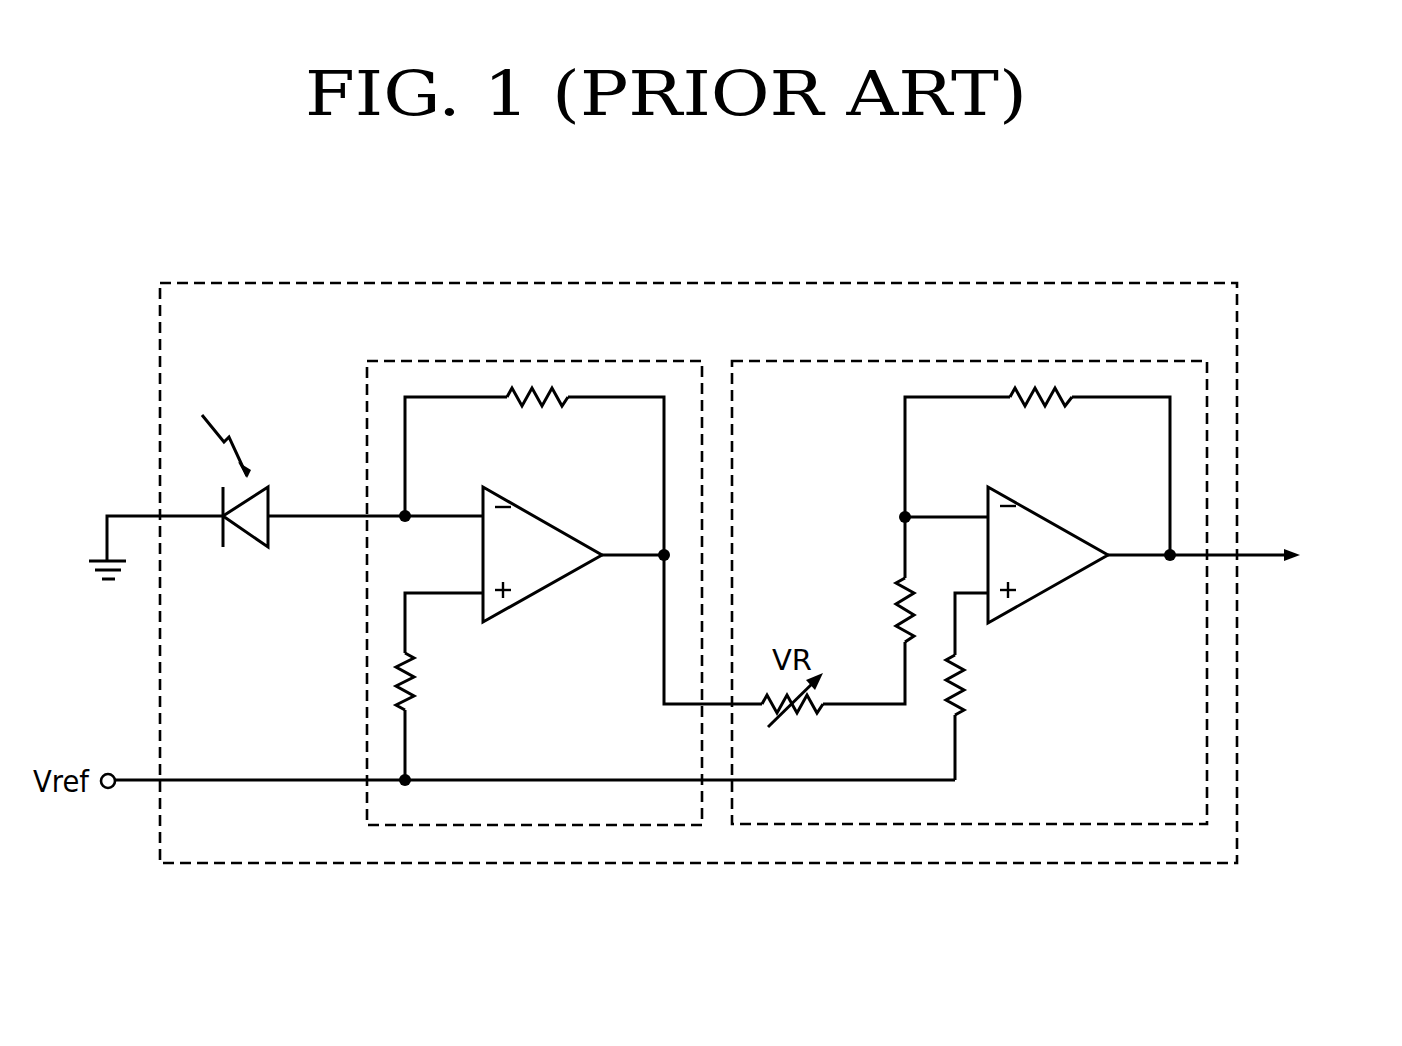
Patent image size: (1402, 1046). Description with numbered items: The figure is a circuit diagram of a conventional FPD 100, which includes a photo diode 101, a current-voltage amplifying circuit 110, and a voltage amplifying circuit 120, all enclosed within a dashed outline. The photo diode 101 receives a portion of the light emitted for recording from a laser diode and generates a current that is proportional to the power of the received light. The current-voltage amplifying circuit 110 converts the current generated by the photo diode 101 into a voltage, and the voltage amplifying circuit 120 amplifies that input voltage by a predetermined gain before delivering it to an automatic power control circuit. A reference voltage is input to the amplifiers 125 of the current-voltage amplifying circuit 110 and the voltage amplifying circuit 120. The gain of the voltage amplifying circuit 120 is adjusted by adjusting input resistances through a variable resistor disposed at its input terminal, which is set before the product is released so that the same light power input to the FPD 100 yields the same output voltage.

The FPD 100 is at (693, 283).
The photo diode 101 is at (247, 532).
The current-voltage amplifying circuit 110 is at (537, 361).
The voltage amplifying circuit 120 is at (975, 361).
The amplifier 125 is at (1055, 590).